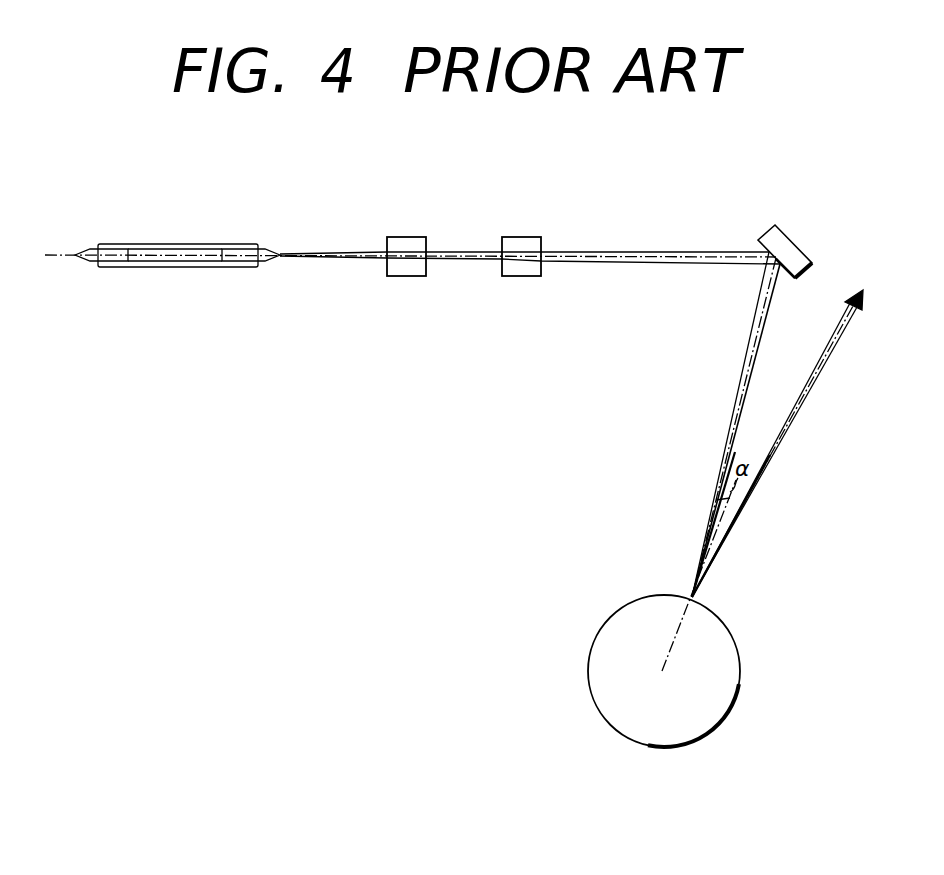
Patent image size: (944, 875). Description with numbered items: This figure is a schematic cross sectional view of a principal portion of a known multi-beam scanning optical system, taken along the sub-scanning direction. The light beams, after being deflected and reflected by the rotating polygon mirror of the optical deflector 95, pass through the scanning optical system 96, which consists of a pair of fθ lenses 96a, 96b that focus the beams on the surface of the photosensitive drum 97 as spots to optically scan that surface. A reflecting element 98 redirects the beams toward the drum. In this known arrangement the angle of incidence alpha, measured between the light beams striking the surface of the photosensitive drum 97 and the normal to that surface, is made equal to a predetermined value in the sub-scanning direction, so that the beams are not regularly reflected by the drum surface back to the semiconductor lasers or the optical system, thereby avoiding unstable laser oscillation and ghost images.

The optical deflector 95 is at (137, 267).
The scanning optical system 96 is at (455, 308).
The fθ lens 96a is at (395, 276).
The fθ lens 96b is at (515, 285).
The photosensitive drum 97 is at (727, 628).
The reflecting mirror 98 is at (795, 236).